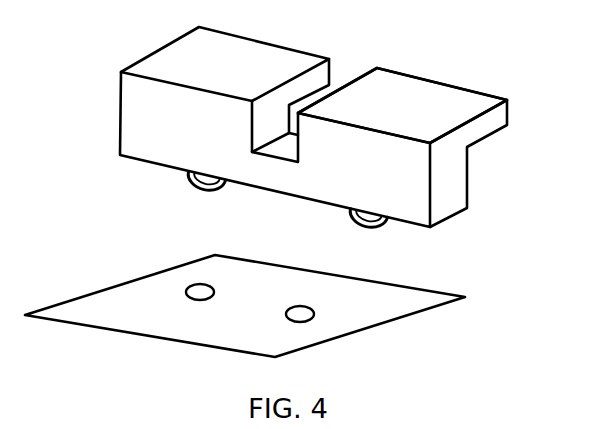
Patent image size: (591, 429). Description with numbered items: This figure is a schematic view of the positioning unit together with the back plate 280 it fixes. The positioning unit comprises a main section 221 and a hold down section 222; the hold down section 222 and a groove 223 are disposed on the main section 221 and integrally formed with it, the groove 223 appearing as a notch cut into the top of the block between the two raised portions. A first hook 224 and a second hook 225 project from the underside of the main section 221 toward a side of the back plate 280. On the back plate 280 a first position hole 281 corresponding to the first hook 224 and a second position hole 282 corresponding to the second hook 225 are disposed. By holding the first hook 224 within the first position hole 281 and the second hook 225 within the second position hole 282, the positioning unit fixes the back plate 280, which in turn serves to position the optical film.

The main section 221 is at (447, 192).
The hold down section 222 is at (418, 85).
The groove 223 is at (280, 112).
The first hook 224 is at (208, 190).
The second hook 225 is at (370, 223).
The back plate 280 is at (390, 302).
The first position hole 281 is at (201, 296).
The second position hole 282 is at (298, 318).